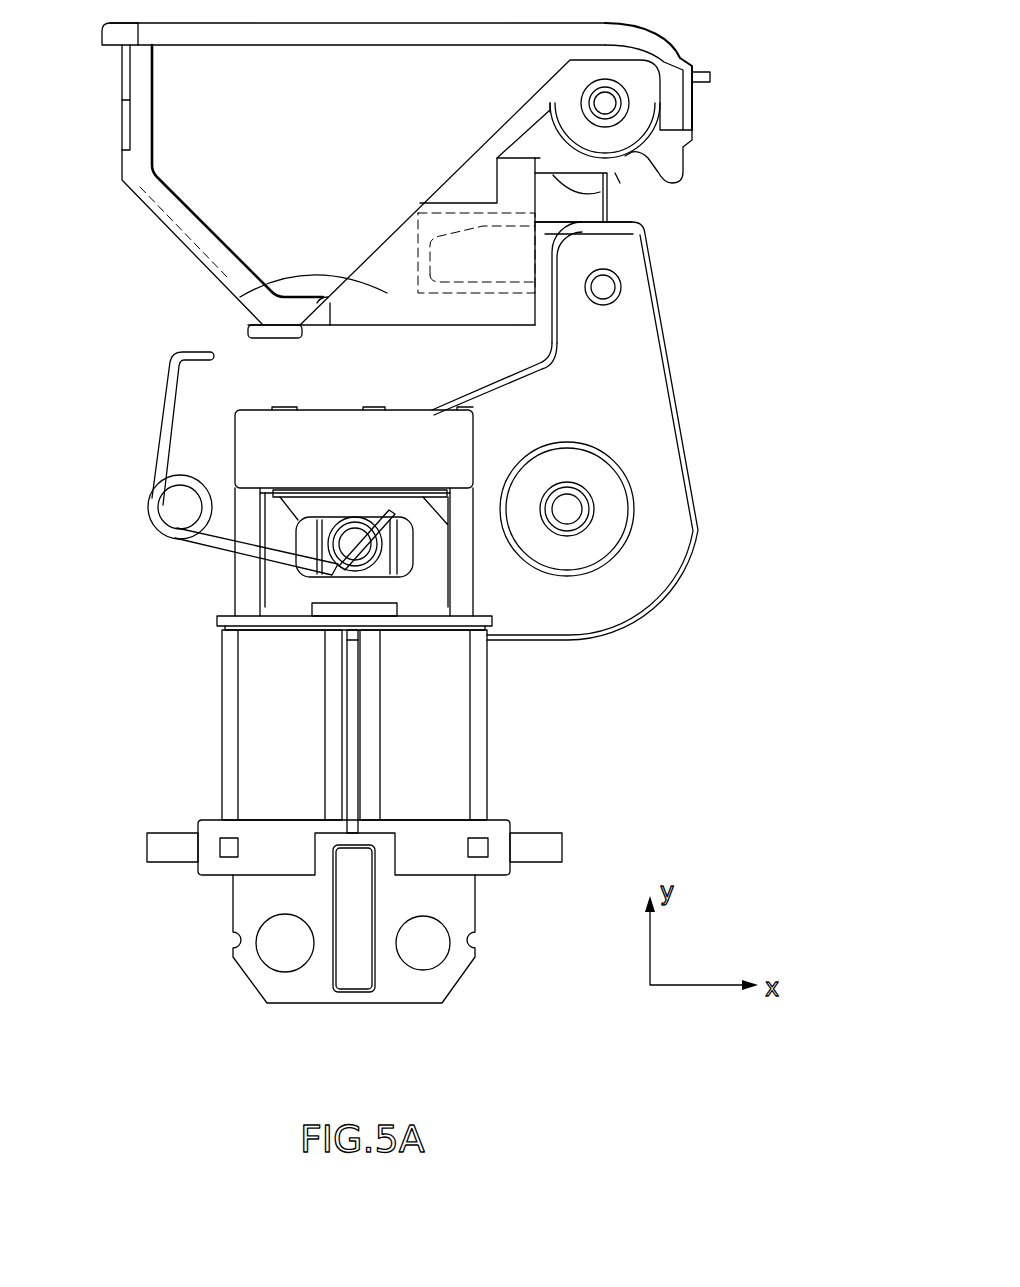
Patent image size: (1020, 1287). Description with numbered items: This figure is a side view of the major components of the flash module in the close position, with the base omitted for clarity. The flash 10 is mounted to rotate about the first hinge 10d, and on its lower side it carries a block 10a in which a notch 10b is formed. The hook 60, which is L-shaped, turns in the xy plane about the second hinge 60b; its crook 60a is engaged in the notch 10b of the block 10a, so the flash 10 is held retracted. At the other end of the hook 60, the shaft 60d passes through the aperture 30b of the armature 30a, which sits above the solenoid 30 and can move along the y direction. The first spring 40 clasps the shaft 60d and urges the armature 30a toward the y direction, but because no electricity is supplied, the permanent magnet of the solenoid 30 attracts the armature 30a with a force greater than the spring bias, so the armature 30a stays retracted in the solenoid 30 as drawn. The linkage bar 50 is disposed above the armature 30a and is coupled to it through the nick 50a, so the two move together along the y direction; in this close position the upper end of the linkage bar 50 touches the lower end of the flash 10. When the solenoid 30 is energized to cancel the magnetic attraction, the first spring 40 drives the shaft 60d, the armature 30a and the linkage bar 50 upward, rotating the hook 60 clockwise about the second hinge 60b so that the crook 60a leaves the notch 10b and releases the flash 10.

The flash 10 is at (118, 162).
The block 10a is at (262, 286).
The notch 10b is at (458, 292).
The first hinge 10d is at (605, 103).
The solenoid 30 is at (210, 738).
The armature 30a is at (283, 603).
The aperture 30b is at (332, 517).
The first spring 40 is at (150, 529).
The linkage bar 50 is at (228, 433).
The nick 50a is at (470, 550).
The hook 60 is at (676, 357).
The crook 60a is at (507, 253).
The second hinge 60b is at (568, 508).
The shaft 60d is at (347, 540).